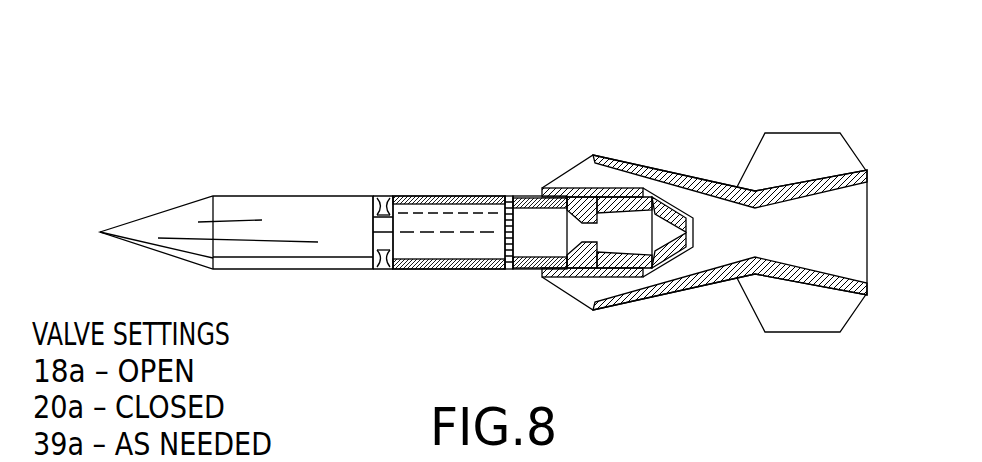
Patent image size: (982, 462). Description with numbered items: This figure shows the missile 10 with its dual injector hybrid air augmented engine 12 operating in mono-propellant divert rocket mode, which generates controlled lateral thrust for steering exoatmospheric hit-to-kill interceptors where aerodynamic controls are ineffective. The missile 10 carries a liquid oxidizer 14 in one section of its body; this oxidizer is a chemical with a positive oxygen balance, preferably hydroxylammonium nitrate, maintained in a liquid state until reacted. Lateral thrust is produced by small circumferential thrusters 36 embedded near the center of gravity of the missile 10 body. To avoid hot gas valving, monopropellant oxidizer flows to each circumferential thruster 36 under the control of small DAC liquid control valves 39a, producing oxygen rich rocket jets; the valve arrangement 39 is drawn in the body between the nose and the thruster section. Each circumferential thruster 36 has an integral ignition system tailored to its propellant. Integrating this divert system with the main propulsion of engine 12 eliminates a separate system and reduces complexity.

The missile 10 is at (270, 148).
The dual injector hybrid air augmented engine 12 is at (487, 163).
The liquid oxidizer 14 is at (448, 250).
The circumferential thrusters 36 is at (383, 197).
The valve 39 is at (344, 220).
The DAC liquid control valves 39a is at (365, 208).